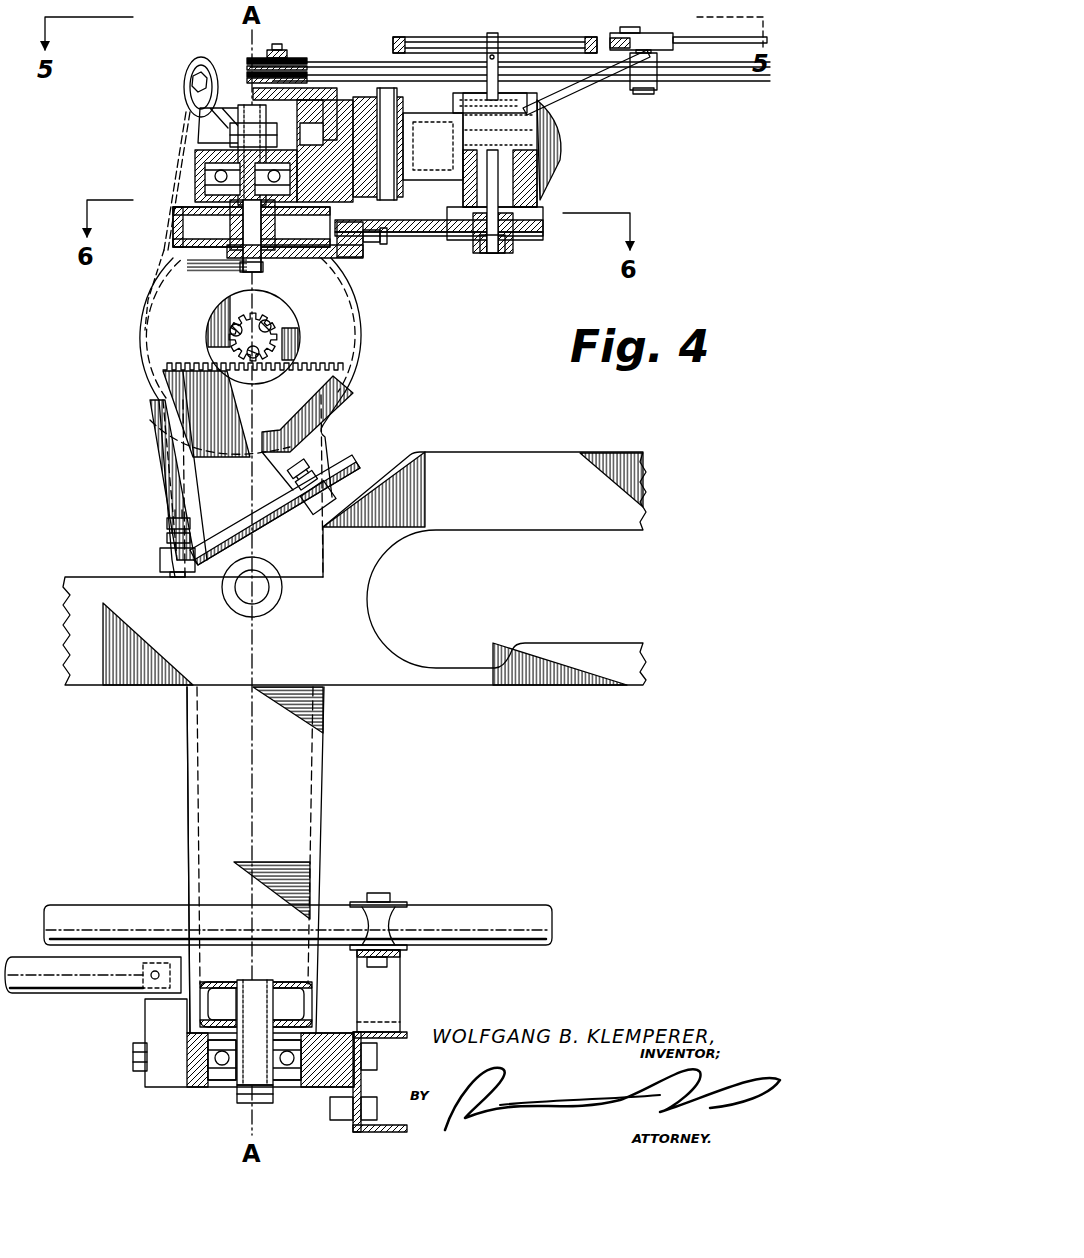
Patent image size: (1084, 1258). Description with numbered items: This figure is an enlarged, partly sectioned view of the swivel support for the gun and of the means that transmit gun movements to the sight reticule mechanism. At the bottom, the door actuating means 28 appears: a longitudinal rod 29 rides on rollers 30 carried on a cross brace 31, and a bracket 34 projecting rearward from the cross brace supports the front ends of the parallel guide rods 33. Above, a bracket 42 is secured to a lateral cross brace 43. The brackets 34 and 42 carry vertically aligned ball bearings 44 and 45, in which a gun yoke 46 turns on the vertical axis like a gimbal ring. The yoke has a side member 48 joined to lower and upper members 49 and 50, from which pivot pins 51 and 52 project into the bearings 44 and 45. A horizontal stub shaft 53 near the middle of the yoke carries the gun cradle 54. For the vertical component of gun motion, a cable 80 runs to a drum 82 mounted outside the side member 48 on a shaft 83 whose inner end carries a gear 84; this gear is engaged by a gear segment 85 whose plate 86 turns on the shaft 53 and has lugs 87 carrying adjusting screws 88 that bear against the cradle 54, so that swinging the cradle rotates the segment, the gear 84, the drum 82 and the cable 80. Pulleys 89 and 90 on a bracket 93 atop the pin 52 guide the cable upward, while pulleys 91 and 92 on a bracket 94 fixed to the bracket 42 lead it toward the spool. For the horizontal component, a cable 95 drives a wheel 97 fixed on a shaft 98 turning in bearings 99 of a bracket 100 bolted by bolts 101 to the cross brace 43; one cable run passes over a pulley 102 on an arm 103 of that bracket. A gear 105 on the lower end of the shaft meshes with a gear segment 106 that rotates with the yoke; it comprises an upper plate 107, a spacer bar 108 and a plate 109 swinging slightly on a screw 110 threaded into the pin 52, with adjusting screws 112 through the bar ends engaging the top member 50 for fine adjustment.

The door actuating means 28 is at (418, 893).
The longitudinal rod 29 is at (505, 917).
The rollers 30 is at (352, 903).
The cross brace 31 is at (370, 1128).
The guide rods 33 is at (68, 972).
The bracket 34 is at (187, 1090).
The bracket 42 is at (336, 183).
The lateral cross brace 43 is at (365, 95).
The ball bearing 44 is at (274, 1070).
The ball bearing 45 is at (200, 165).
The gun yoke 46 is at (330, 768).
The side member 48 is at (225, 808).
The member 49 is at (295, 986).
The member 50 is at (178, 230).
The pivot pin 51 is at (240, 1072).
The pivot pin 52 is at (278, 150).
The stub shaft 53 is at (245, 592).
The gun cradle 54 is at (548, 468).
The cable 80 is at (183, 118).
The drum 82 is at (145, 340).
The shaft 83 is at (285, 338).
The gear 84 is at (272, 318).
The gear segment 85 is at (352, 390).
The plate 86 is at (205, 458).
The lugs 87 is at (333, 492).
The adjusting screws 88 is at (305, 463).
The pulley 89 is at (205, 60).
The pulley 90 is at (270, 124).
The pulley 91 is at (293, 48).
The pulley 92 is at (300, 68).
The bracket 93 is at (210, 128).
The bracket 94 is at (330, 88).
The cable 95 is at (690, 36).
The wheel 97 is at (513, 37).
The shaft 98 is at (480, 43).
The bearings 99 is at (522, 112).
The bracket 100 is at (452, 158).
The bolts 101 is at (405, 112).
The pulley 102 is at (627, 34).
The arm 103 is at (590, 102).
The gear 105 is at (515, 240).
The gear segment 106 is at (458, 236).
The upper plate 107 is at (438, 233).
The spacer bar 108 is at (360, 240).
The plate 109 is at (285, 250).
The screw 110 is at (250, 265).
The adjusting screws 112 is at (386, 238).